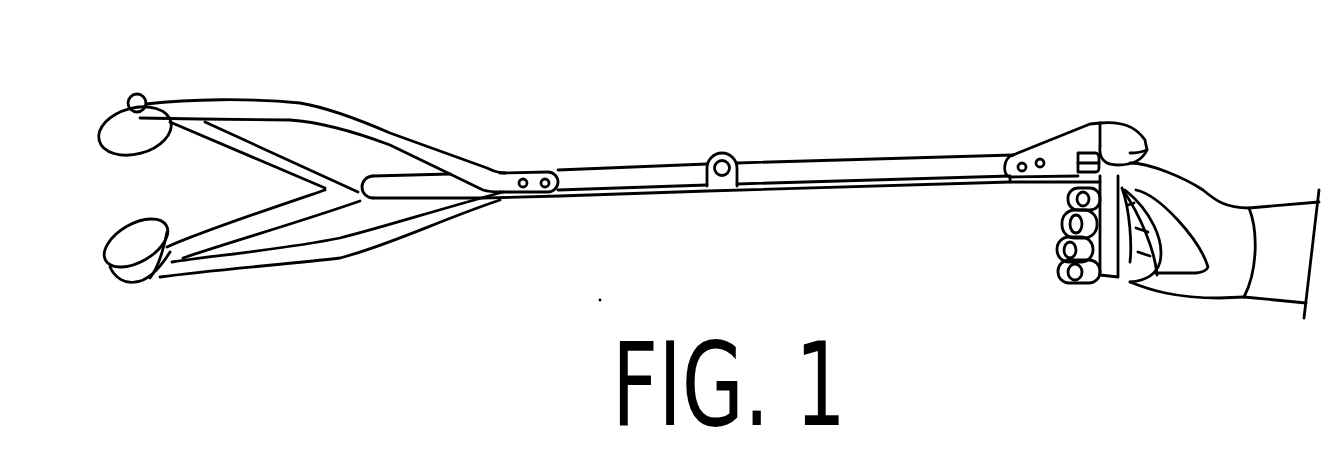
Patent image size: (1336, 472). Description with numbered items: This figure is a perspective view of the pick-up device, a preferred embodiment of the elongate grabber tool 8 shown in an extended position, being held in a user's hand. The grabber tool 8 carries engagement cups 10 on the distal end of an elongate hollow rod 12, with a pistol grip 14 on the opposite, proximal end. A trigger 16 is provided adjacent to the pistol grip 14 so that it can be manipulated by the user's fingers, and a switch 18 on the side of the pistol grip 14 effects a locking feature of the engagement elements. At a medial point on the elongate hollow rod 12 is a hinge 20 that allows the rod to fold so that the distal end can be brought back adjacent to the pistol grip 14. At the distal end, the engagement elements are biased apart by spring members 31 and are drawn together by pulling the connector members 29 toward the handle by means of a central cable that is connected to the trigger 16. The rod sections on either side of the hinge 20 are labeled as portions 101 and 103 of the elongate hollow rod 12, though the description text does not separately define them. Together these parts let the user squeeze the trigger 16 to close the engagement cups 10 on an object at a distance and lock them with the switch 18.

The elongate grabber tool 8 is at (508, 128).
The engagement cups 10 is at (117, 270).
The elongate hollow rod 12 is at (607, 193).
The pistol grip 14 is at (1065, 143).
The trigger 16 is at (1107, 287).
The switch 18 is at (1010, 182).
The hinge 20 is at (737, 157).
The connector members 29 is at (280, 157).
The spring members 31 is at (302, 103).
The first tube section 101 is at (620, 170).
The second tube section 103 is at (863, 167).